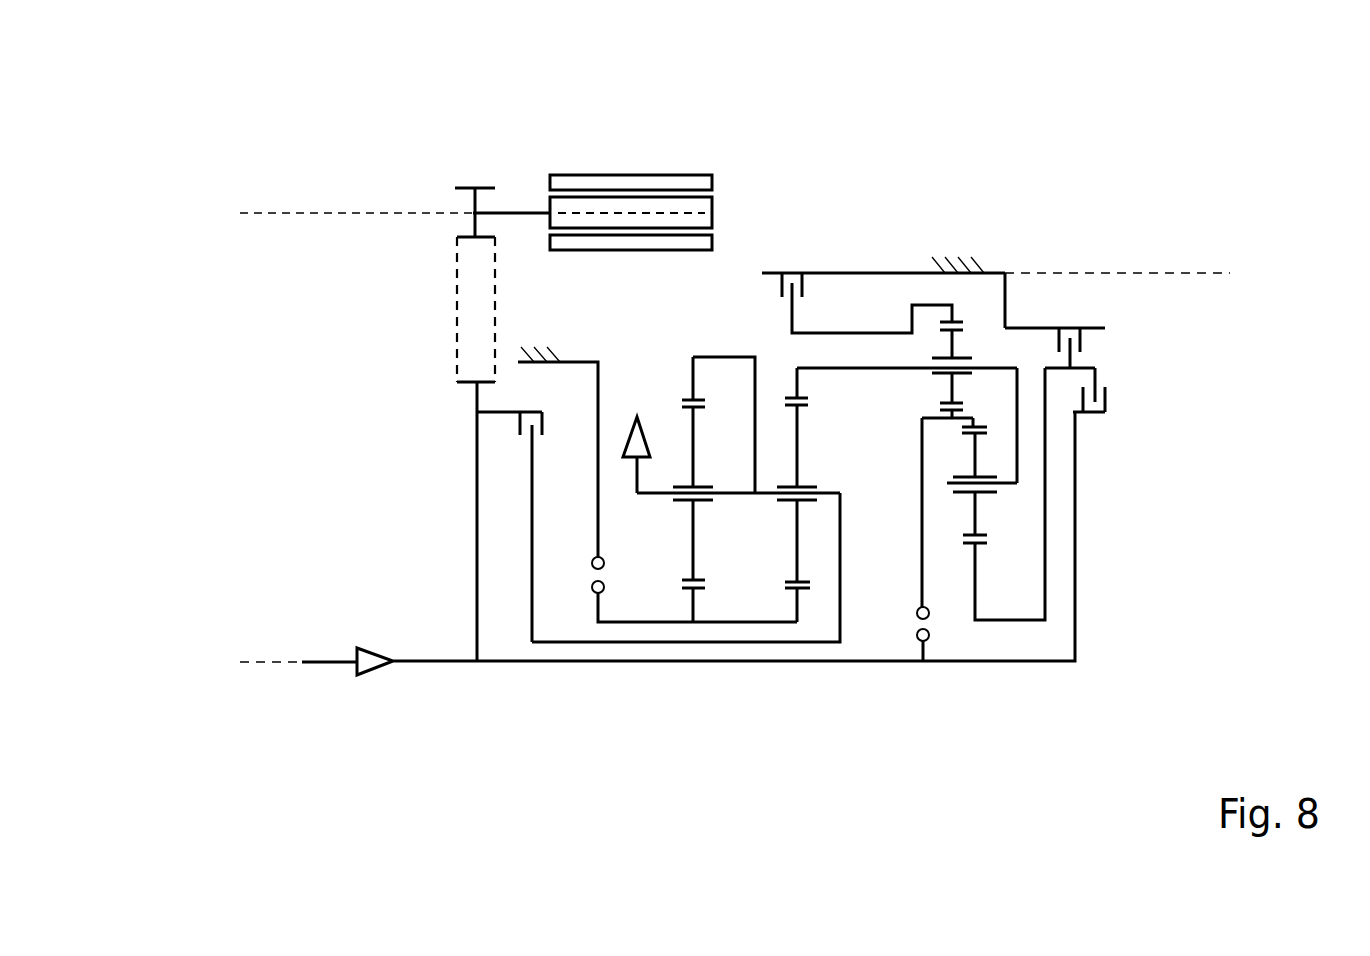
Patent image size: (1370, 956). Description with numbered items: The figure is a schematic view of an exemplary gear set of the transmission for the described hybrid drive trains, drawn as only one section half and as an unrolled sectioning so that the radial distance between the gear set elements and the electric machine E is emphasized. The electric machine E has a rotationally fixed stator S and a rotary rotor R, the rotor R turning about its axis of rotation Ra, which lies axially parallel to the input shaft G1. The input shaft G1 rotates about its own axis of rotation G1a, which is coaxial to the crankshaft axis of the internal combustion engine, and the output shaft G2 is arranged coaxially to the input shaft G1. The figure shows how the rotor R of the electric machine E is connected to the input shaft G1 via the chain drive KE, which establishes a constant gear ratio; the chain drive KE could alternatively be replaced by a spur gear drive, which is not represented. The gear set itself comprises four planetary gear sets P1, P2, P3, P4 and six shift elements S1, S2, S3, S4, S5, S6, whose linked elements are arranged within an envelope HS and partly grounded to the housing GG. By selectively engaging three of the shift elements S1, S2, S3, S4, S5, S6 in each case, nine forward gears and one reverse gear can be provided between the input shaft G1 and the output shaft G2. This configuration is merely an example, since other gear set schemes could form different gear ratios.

The electric machine E is at (631, 172).
The rotor R is at (590, 220).
The stator S is at (630, 245).
The axis of rotation Ra is at (374, 212).
The chain drive KE is at (455, 300).
The envelope HS is at (1018, 290).
The housing GG is at (953, 258).
The shift element S6 is at (808, 286).
The planetary gear set P4 is at (964, 348).
The shift element S5 is at (1094, 342).
The shift element S4 is at (1114, 403).
The planetary gear set P3 is at (984, 503).
The shift element S2 is at (912, 624).
The planetary gear set P2 is at (809, 514).
The planetary gear set P1 is at (705, 514).
The output shaft G2 is at (637, 495).
The shift element S1 is at (591, 578).
The shift element S3 is at (522, 447).
The input shaft G1 is at (420, 664).
The axis of rotation G1a is at (272, 665).